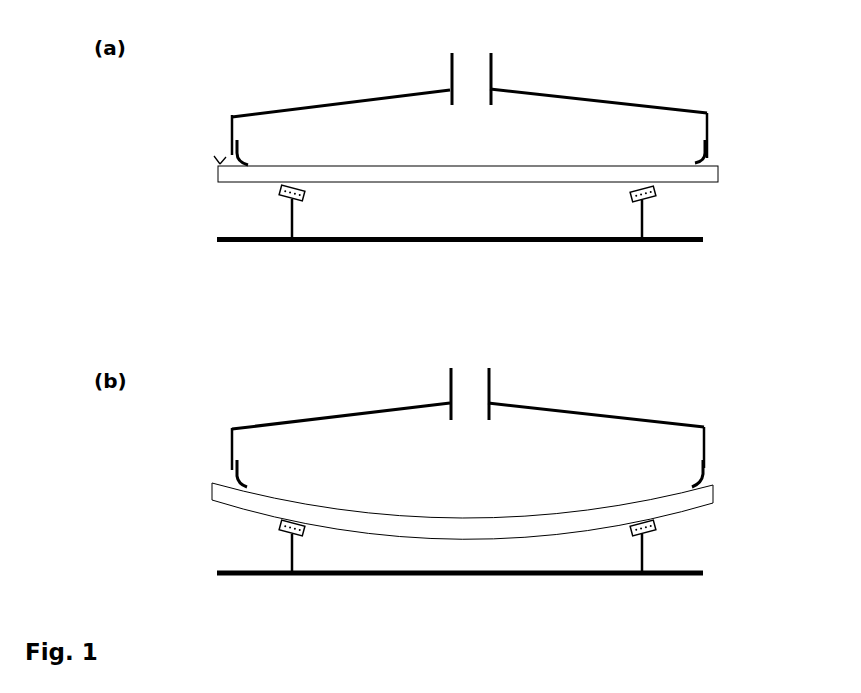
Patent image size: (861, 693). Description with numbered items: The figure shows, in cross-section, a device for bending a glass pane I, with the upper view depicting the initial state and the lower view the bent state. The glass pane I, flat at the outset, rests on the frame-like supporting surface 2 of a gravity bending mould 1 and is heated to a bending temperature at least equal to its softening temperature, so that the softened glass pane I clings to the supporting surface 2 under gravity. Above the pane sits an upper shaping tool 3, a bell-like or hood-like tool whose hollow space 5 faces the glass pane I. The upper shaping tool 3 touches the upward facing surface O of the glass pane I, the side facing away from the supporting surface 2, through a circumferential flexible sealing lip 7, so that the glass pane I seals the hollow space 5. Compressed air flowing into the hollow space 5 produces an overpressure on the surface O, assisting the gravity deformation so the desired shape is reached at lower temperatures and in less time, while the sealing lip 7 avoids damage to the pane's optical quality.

The gravity bending mould 1 is at (685, 242).
The supporting surface 2 is at (655, 188).
The upper shaping tool 3 is at (627, 102).
The hollow space 5 is at (462, 444).
The sealing lip 7 is at (245, 157).
The upward facing surface O is at (220, 163).
The glass pane I is at (434, 363).